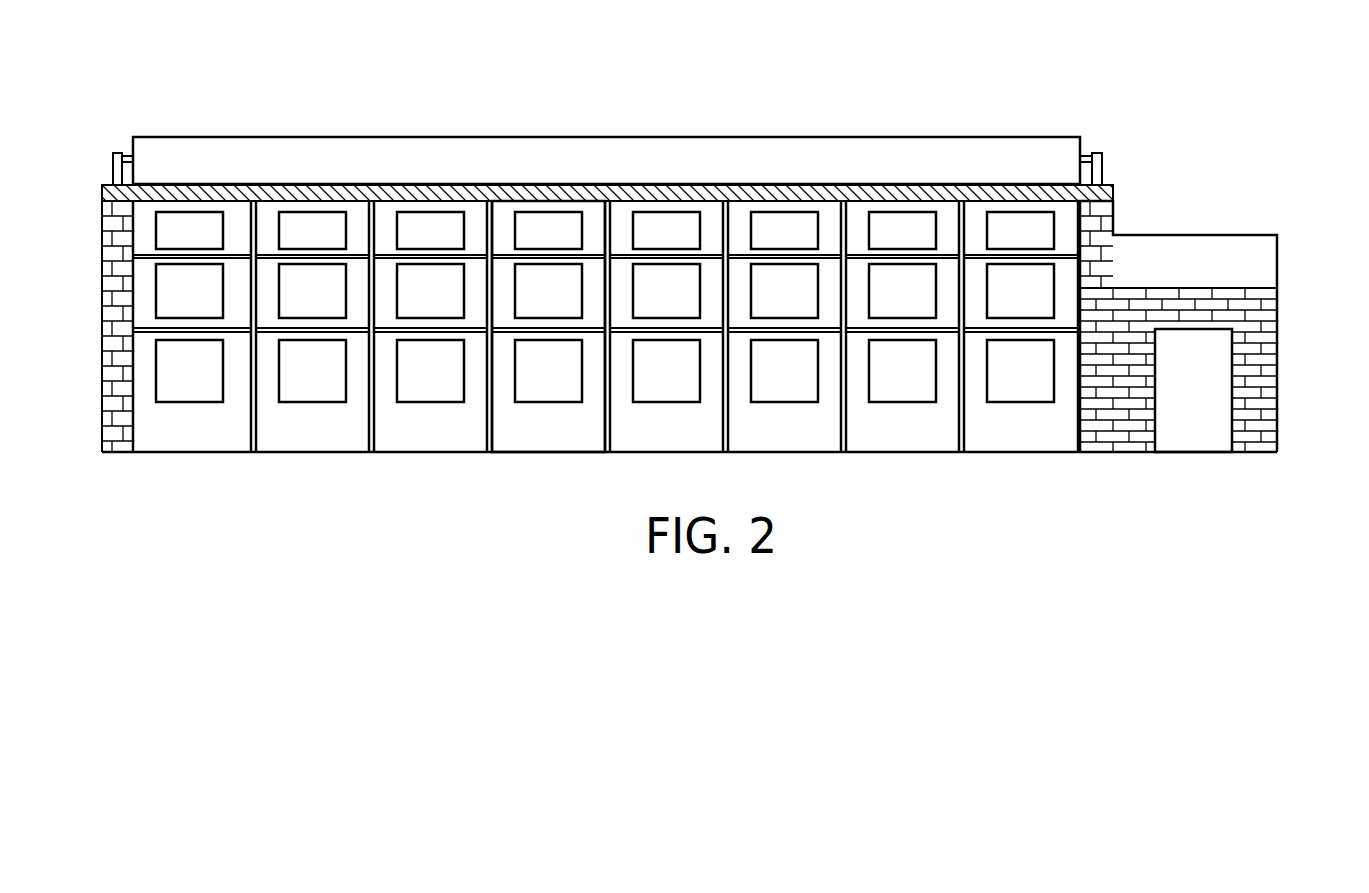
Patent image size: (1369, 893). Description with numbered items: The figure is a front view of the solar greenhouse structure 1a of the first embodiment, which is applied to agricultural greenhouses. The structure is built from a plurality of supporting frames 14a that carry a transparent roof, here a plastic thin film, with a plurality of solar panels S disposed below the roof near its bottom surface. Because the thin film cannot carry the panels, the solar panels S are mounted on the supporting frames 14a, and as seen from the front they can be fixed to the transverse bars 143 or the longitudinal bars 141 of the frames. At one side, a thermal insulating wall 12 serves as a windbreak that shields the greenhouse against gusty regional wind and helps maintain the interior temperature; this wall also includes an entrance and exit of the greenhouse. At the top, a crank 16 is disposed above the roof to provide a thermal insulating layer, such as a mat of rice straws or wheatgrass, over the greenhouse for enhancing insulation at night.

The solar greenhouse structure 1a is at (1183, 83).
The crank 16 is at (762, 150).
The thermal insulating wall 12 is at (1267, 357).
The supporting frame 14a is at (500, 428).
The longitudinal bar 141 is at (372, 401).
The transverse bar 143 is at (267, 332).
The solar panel S is at (172, 356).